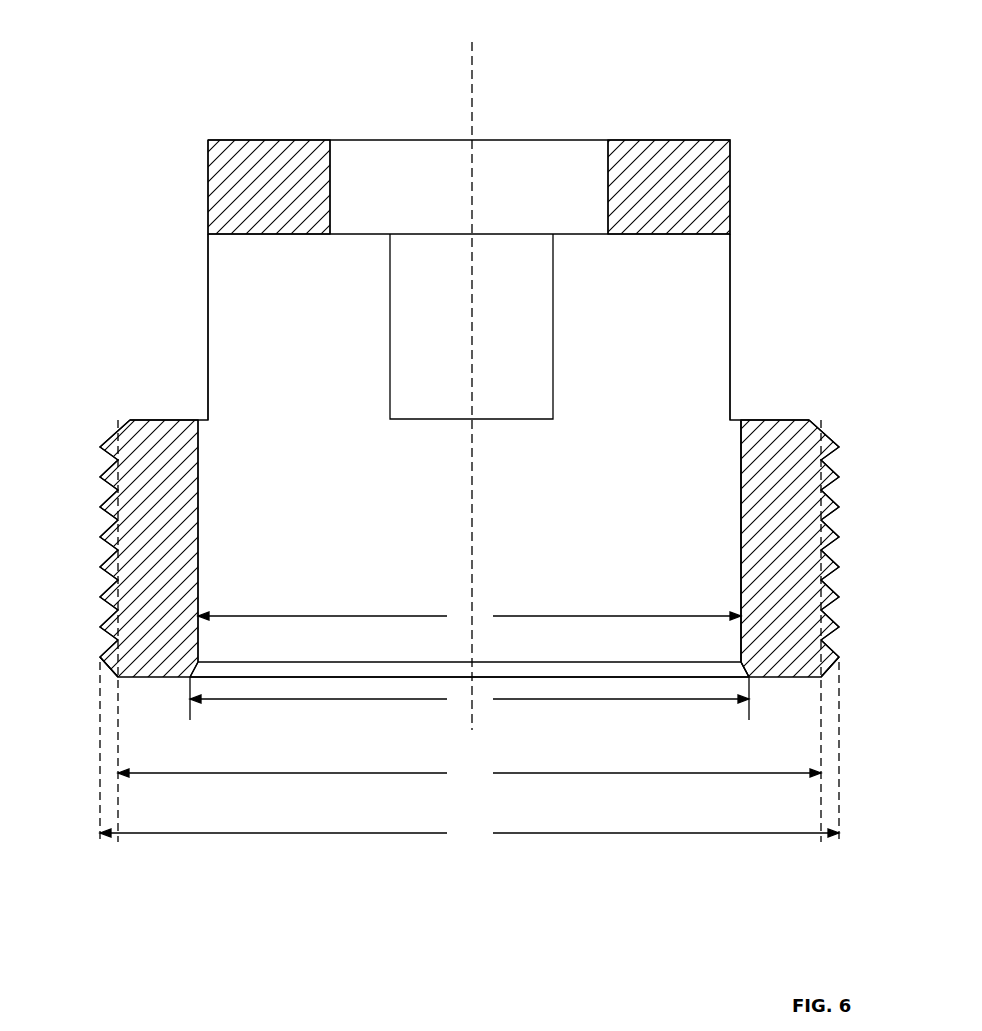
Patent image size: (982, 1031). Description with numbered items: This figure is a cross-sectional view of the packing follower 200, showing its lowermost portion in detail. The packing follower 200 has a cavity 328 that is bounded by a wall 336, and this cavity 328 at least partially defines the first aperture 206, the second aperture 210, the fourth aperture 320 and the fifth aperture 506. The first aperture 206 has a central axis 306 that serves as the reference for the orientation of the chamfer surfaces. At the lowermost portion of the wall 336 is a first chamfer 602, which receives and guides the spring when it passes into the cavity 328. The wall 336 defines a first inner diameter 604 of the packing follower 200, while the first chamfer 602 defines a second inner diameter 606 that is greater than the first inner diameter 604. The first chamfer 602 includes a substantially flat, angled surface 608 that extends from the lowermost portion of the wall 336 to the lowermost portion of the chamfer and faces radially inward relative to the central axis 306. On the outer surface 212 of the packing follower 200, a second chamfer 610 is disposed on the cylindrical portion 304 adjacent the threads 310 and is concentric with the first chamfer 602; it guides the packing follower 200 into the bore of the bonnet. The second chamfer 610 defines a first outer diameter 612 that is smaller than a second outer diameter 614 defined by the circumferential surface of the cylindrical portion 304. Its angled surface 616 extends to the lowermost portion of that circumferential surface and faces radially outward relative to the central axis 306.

The packing follower 200 is at (208, 168).
The first aperture 206 is at (576, 156).
The second aperture 210 is at (704, 267).
The outer surface 212 is at (830, 430).
The cylindrical portion 304 is at (177, 513).
The central axis 306 is at (472, 60).
The threads 310 is at (104, 621).
The fourth aperture 320 is at (228, 296).
The cavity 328 is at (715, 426).
The wall 336 is at (652, 546).
The fifth aperture 506 is at (402, 390).
The first chamfer 602 is at (739, 669).
The first inner diameter 604 is at (469, 615).
The second inner diameter 606 is at (469, 699).
The angled surface 608 is at (270, 668).
The second chamfer 610 is at (109, 682).
The first outer diameter 612 is at (469, 631).
The second outer diameter 614 is at (469, 752).
The angled surface 616 is at (828, 682).